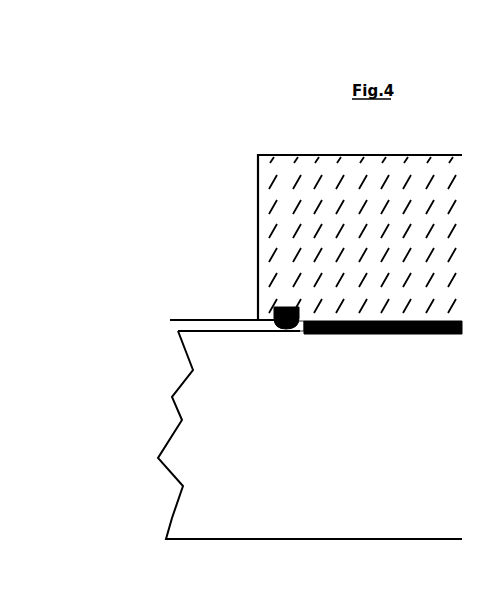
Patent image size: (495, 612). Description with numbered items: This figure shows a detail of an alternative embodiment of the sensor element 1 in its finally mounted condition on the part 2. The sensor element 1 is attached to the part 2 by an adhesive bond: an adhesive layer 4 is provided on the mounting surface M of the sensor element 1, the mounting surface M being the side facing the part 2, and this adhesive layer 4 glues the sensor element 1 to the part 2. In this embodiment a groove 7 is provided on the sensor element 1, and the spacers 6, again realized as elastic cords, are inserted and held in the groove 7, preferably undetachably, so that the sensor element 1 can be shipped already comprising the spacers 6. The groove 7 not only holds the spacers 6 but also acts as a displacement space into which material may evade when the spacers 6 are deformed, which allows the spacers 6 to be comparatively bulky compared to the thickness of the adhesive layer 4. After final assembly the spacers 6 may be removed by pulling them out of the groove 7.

The sensor element 1 is at (335, 155).
The part 2 is at (228, 427).
The adhesive layer 4 is at (360, 334).
The spacers 6 is at (170, 320).
The groove 7 is at (297, 308).
The mounting surface M is at (308, 323).